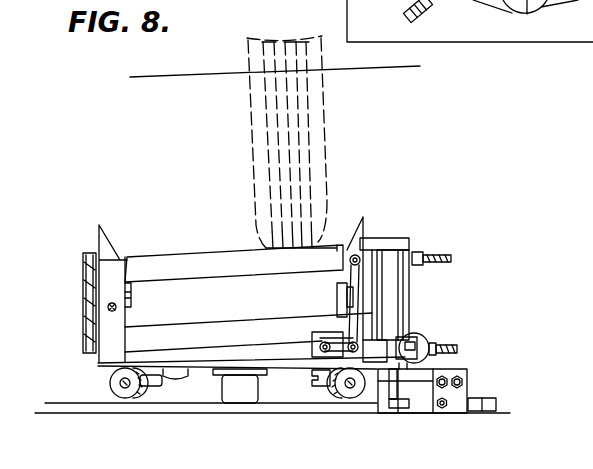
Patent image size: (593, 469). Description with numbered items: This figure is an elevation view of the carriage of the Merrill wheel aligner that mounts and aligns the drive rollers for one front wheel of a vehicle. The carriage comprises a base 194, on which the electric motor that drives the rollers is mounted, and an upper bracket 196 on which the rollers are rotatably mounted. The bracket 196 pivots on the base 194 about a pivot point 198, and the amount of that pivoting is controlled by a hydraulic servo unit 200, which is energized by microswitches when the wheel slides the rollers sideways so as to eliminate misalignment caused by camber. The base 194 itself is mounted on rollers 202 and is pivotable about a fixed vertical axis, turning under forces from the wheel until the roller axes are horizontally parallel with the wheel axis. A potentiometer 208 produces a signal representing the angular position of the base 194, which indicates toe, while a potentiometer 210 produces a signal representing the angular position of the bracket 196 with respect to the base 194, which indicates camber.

The base 194 is at (191, 368).
The upper bracket 196 is at (193, 260).
The pivot point 198 is at (117, 305).
The hydraulic servo unit 200 is at (406, 309).
The rollers 202 is at (110, 383).
The potentiometer 208 is at (537, 6).
The potentiometer 210 is at (320, 345).